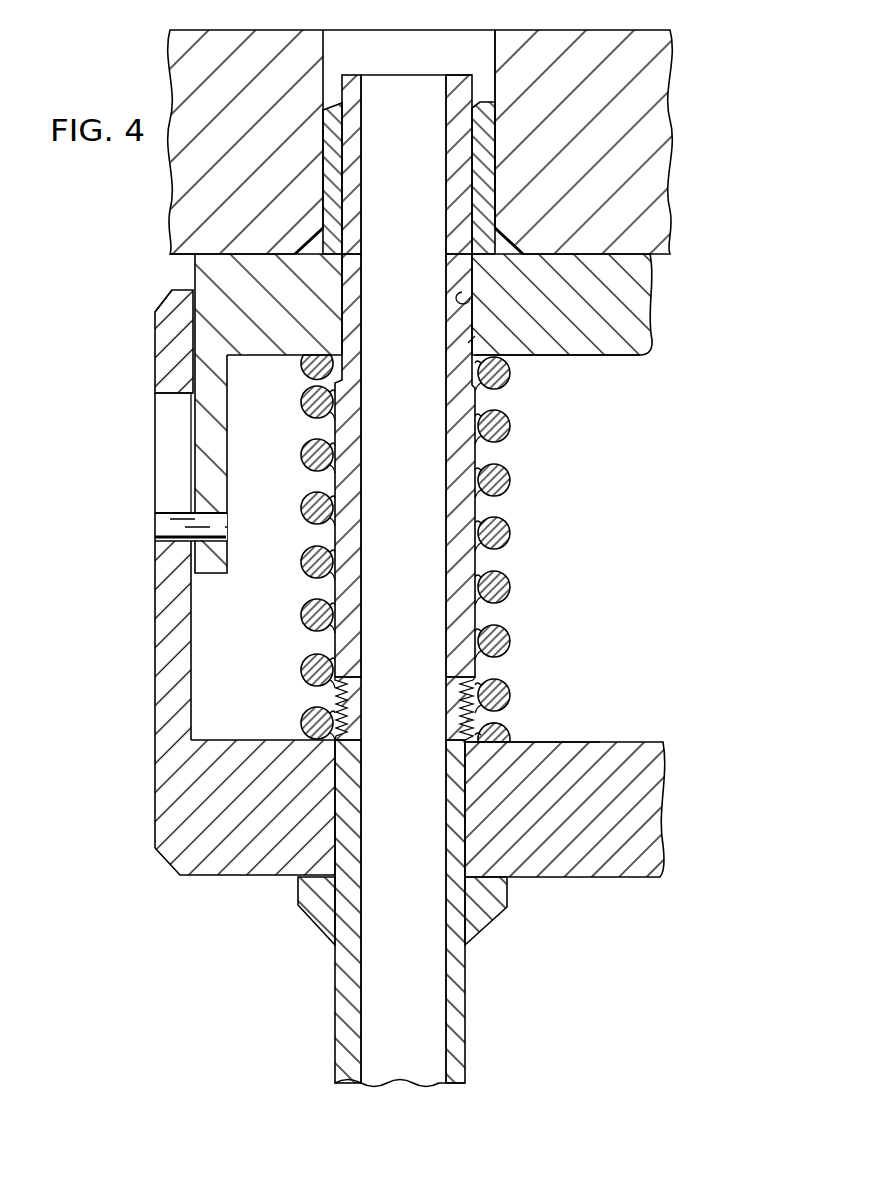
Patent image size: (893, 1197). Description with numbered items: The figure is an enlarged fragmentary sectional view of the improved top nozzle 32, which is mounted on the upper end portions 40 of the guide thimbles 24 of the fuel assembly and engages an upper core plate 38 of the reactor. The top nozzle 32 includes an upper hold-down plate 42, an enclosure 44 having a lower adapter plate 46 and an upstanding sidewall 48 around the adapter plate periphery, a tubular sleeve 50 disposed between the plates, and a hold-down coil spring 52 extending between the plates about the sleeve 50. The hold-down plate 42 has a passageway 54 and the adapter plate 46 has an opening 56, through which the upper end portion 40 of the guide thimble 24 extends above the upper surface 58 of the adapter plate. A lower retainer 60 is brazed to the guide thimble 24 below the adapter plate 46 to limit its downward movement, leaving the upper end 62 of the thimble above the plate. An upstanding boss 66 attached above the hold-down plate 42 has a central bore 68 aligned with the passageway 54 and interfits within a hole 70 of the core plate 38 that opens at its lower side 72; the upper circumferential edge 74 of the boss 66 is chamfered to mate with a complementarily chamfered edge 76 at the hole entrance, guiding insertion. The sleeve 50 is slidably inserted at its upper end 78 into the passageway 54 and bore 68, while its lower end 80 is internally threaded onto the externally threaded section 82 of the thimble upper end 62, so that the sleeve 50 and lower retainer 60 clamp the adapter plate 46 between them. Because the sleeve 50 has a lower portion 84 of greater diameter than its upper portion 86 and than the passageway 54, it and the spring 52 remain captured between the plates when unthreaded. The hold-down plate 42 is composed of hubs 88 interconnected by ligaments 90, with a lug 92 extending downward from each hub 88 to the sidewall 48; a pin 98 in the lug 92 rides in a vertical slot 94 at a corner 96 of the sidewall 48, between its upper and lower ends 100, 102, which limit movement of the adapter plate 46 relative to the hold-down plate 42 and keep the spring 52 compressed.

The guide thimble 24 is at (475, 1033).
The improved top nozzle 32 is at (128, 337).
The upper core plate 38 is at (672, 73).
The upper end portion of guide thimble 40 is at (470, 955).
The upper hold-down plate 42 is at (660, 302).
The enclosure 44 is at (148, 773).
The lower adapter plate 46 is at (653, 805).
The upstanding sidewall 48 is at (153, 665).
The tubular sleeve 50 is at (487, 507).
The hold-down coil spring 52 is at (511, 424).
The passageway 54 is at (470, 298).
The opening 56 is at (338, 790).
The upper surface of adapter plate 58 is at (600, 740).
The lower retainer 60 is at (508, 893).
The upper end of guide thimble 62 is at (447, 812).
The upstanding boss 66 is at (490, 152).
The central bore 68 is at (366, 125).
The hole 70 is at (488, 95).
The lower side of core plate 72 is at (190, 258).
The upper circumferential edge of boss 74 is at (333, 103).
The chamfered edge 76 is at (345, 263).
The upper end of sleeve 78 is at (462, 100).
The lower end of sleeve 80 is at (480, 682).
The externally threaded section 82 is at (450, 708).
The lower portion of sleeve 84 is at (470, 621).
The upper portion of sleeve 86 is at (468, 343).
The hub 88 is at (275, 318).
The ligament 90 is at (622, 358).
The lug 92 is at (207, 460).
The vertical slot 94 is at (173, 490).
The corner 96 is at (153, 631).
The pin 98 is at (157, 520).
The upper end of slot 100 is at (168, 410).
The lower end of slot 102 is at (173, 562).